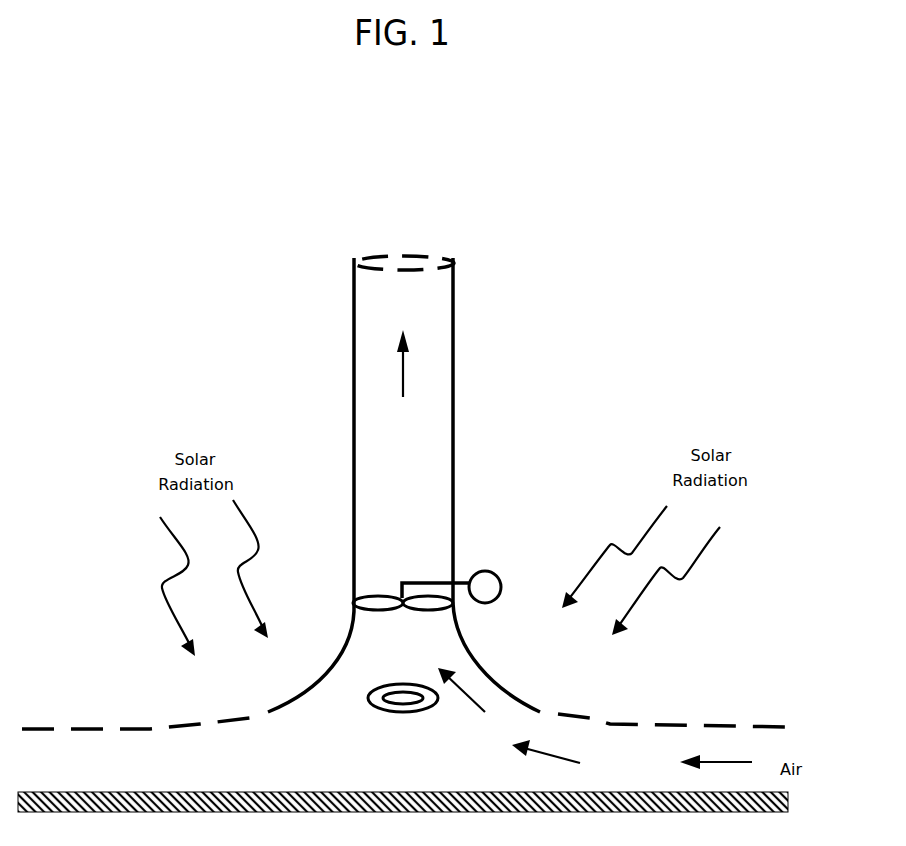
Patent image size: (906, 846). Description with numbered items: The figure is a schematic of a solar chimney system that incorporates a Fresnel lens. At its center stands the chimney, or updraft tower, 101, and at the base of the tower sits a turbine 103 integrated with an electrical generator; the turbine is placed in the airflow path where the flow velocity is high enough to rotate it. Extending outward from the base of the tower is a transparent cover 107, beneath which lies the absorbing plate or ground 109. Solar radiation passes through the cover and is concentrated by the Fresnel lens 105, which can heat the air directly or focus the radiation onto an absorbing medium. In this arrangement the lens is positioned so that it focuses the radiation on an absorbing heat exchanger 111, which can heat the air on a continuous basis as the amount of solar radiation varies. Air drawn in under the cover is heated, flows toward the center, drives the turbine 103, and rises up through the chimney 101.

The chimney 101 is at (455, 421).
The turbine 103 is at (374, 598).
The Fresnel lens 105 is at (324, 655).
The transparent cover 107 is at (133, 722).
The absorbing plate (or ground) 109 is at (628, 812).
The absorbing heat exchanger 111 is at (380, 708).